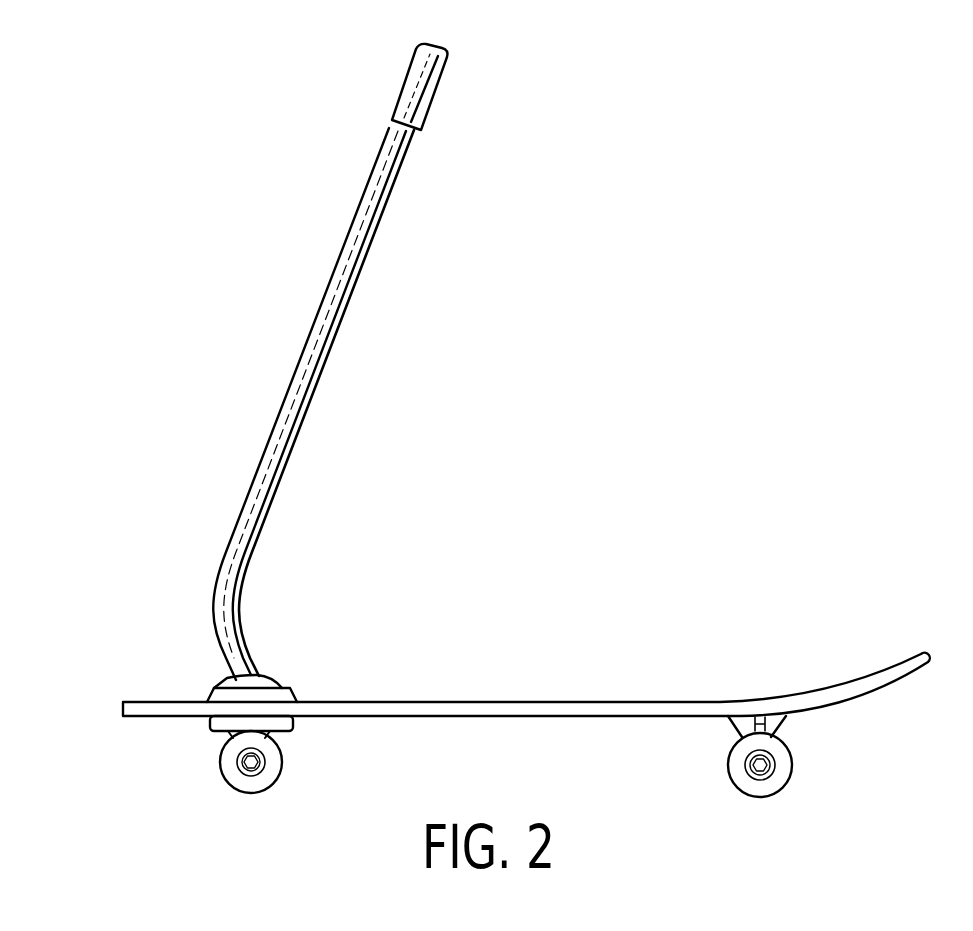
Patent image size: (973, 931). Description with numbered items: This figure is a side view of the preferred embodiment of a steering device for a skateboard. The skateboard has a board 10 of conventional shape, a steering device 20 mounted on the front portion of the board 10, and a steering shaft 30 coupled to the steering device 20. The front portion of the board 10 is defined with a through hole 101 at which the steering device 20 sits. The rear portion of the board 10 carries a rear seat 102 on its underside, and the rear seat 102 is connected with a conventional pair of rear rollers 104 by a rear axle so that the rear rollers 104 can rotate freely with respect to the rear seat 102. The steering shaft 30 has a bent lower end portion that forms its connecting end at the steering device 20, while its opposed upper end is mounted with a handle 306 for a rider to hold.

The board 10 is at (580, 702).
The steering device 20 is at (338, 373).
The steering shaft 30 is at (332, 355).
The through hole 101 is at (211, 676).
The rear seat 102 is at (786, 720).
The rear rollers 104 is at (795, 769).
The handle 306 is at (443, 90).